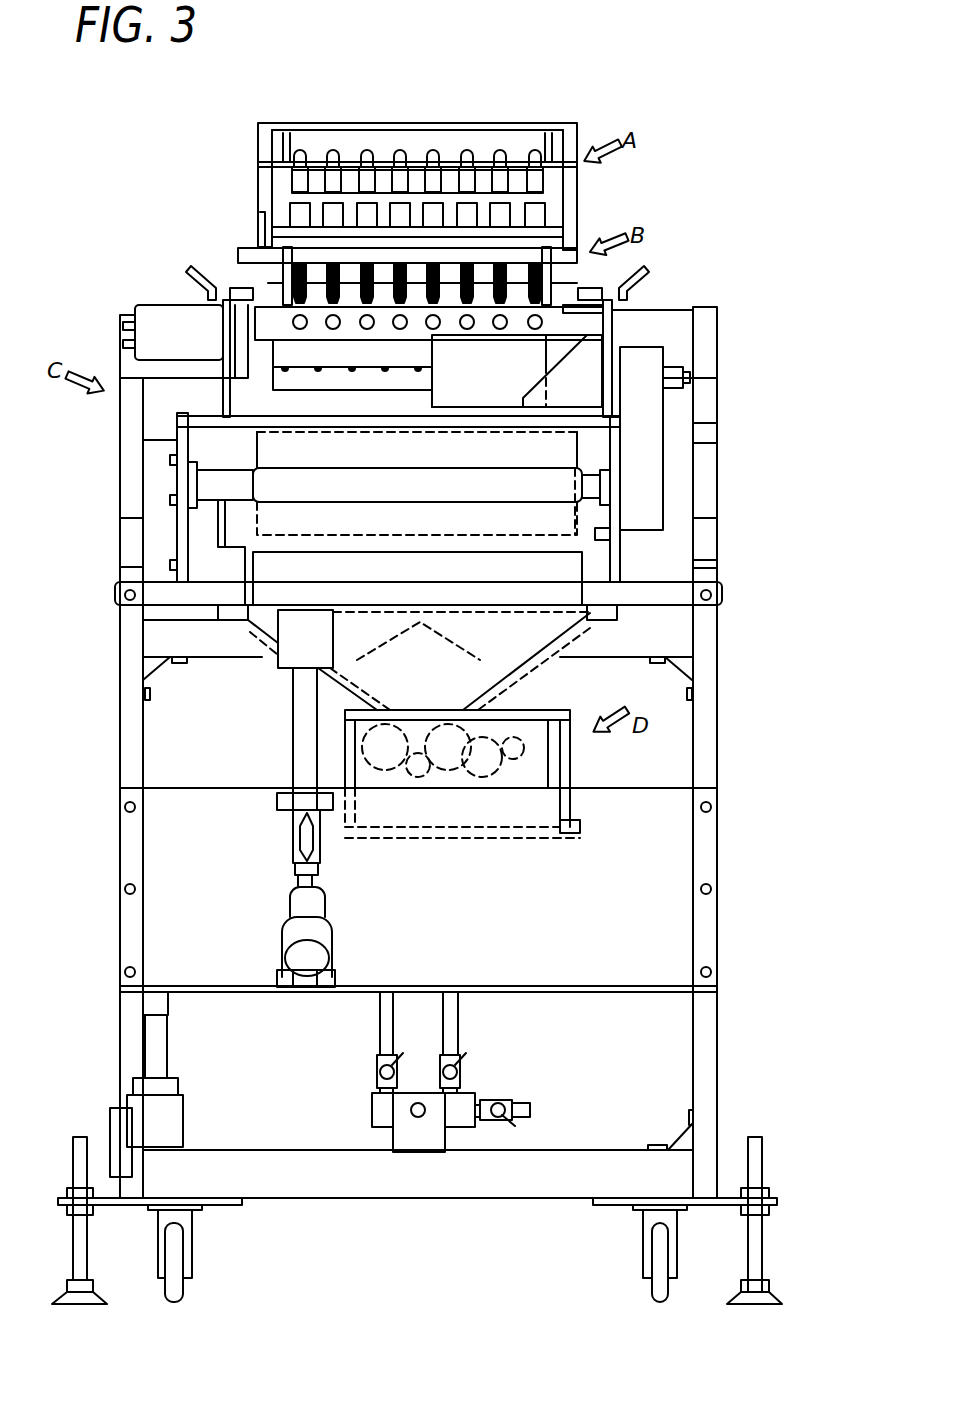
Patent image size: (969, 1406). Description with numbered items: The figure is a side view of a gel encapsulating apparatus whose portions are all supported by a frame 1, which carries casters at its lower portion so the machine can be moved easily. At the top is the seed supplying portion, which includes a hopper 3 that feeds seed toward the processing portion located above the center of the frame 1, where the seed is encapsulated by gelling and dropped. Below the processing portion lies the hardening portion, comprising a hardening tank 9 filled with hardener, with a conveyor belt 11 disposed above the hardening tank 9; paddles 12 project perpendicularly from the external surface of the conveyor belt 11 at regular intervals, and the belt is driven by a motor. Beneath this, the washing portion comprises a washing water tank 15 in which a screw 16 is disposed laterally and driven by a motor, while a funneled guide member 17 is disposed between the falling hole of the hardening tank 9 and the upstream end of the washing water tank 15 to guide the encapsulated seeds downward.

The frame 1 is at (125, 750).
The hopper 3 is at (420, 122).
The hardening tank 9 is at (257, 528).
The conveyor belt 11 is at (292, 462).
The paddles 12 is at (257, 437).
The washing water tank 15 is at (537, 755).
The screw 16 is at (385, 770).
The funneled guide member 17 is at (518, 648).